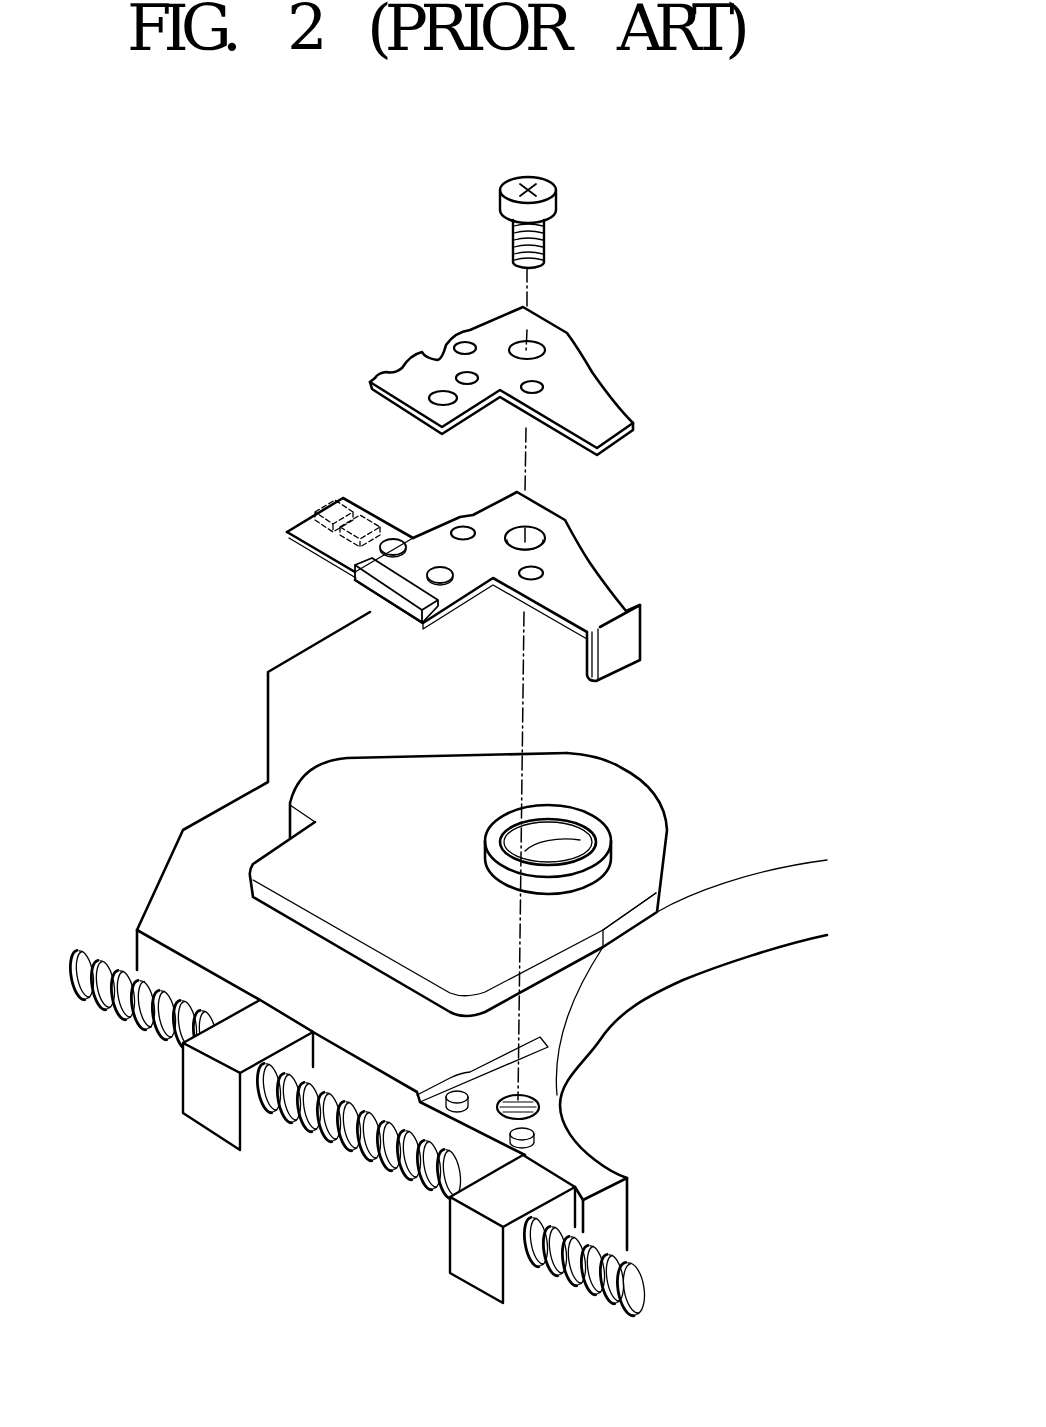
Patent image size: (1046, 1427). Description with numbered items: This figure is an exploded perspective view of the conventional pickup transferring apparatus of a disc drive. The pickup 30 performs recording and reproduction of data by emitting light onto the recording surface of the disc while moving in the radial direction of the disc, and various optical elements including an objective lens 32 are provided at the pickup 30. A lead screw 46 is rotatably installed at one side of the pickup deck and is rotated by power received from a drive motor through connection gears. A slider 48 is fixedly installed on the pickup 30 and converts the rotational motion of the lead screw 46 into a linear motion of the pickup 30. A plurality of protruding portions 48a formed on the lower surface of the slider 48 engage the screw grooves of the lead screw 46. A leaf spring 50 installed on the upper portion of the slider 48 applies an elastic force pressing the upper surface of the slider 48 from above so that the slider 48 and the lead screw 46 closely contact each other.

The pickup 30 is at (217, 803).
The objective lens 32 is at (590, 830).
The lead screw 46 is at (122, 1025).
The slider 48 is at (607, 567).
The protruding portions 48a is at (327, 523).
The leaf spring 50 is at (583, 393).